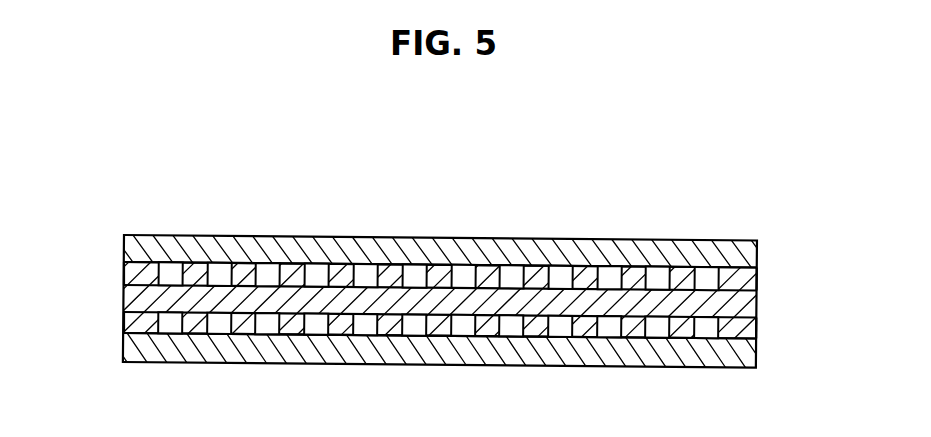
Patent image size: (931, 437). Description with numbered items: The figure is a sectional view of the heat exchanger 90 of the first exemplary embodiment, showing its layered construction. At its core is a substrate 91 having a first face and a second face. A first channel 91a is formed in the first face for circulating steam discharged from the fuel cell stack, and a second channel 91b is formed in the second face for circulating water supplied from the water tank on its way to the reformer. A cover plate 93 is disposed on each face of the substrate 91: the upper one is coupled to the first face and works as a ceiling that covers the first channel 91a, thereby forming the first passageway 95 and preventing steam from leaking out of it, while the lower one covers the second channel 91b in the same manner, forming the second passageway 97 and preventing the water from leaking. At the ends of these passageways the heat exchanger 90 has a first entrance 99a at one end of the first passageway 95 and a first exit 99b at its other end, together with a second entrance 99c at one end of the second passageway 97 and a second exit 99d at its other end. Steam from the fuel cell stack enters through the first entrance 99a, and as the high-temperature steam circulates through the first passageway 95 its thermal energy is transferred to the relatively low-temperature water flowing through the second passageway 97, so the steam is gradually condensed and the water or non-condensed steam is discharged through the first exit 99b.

The heat exchanger 90 is at (455, 139).
The substrate 91 is at (770, 303).
The first channel 91a is at (514, 287).
The second channel 91b is at (369, 333).
The cover plate 93 is at (145, 234).
The first passageway 95 is at (417, 261).
The second passageway 97 is at (270, 327).
The first entrance 99a is at (130, 272).
The first exit 99b is at (743, 282).
The second entrance 99c is at (128, 322).
The second exit 99d is at (743, 325).